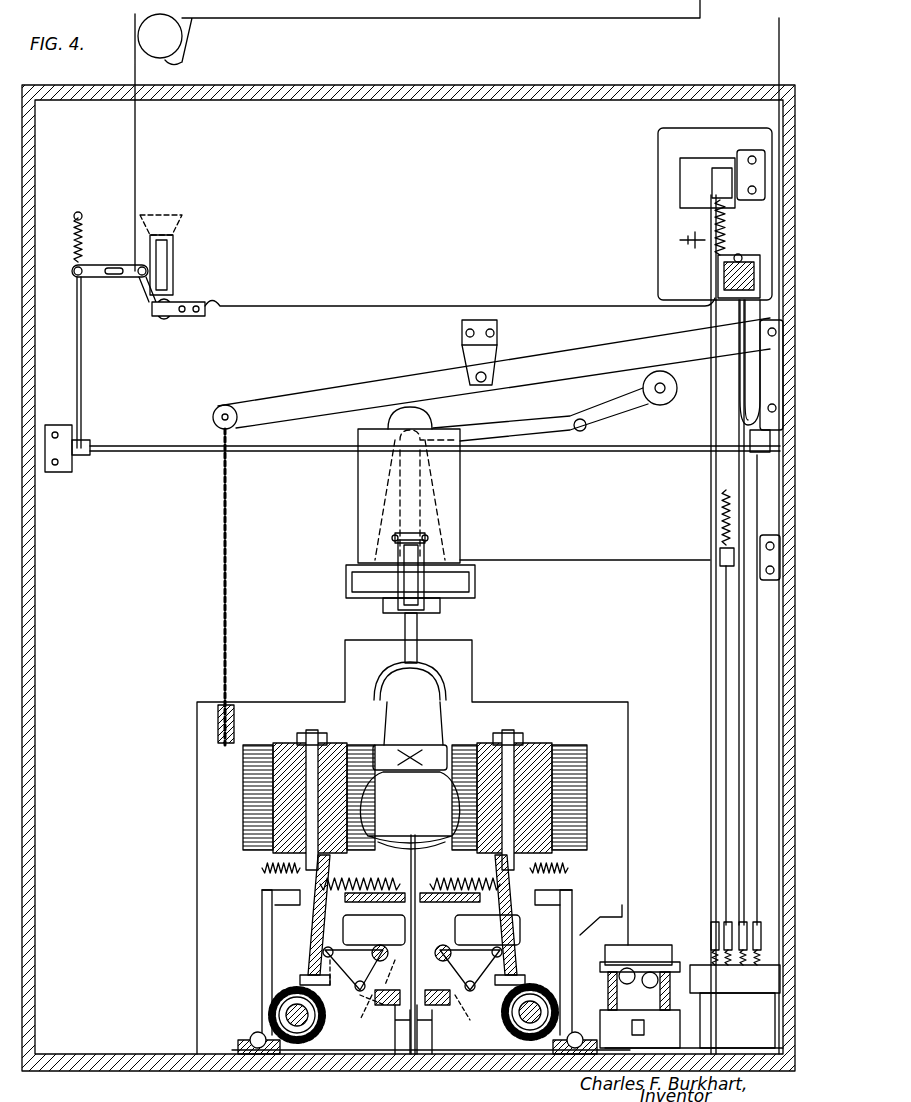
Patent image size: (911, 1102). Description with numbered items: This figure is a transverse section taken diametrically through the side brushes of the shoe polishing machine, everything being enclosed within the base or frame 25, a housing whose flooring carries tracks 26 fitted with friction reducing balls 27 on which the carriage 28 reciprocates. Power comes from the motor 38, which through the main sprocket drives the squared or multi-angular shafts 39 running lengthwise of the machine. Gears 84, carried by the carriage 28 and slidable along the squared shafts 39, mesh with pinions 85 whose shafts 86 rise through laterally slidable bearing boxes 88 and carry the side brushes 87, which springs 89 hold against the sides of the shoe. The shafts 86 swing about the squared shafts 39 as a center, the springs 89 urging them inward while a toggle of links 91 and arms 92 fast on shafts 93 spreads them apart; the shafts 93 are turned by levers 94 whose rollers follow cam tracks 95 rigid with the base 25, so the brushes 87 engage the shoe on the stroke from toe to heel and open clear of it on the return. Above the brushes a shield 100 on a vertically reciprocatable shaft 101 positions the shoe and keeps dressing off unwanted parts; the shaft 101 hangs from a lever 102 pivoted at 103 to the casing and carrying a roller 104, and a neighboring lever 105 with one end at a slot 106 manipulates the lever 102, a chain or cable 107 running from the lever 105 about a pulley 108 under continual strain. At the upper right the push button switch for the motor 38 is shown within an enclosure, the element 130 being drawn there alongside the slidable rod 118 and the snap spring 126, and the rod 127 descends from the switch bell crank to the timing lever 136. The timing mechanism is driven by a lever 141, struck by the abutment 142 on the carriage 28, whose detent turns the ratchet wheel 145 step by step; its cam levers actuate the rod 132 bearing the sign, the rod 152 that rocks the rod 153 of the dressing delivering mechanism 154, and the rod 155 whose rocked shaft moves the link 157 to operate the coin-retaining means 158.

The base or frame 25 is at (790, 786).
The tracks 26 is at (282, 1056).
The balls 27 is at (256, 1055).
The carriage 28 is at (262, 935).
The motor 38 is at (417, 135).
The squared or multi-angular shafts 39 is at (322, 1022).
The gears 84 is at (525, 1018).
The pinions 85 is at (275, 990).
The shafts 86 is at (300, 880).
The side brushes 87 is at (403, 800).
The bearing boxes 88 is at (262, 872).
The springs 89 is at (410, 876).
The links 91 is at (412, 975).
The arms 92 is at (431, 922).
The shafts 93 is at (400, 964).
The levers 94 is at (414, 1022).
The cam tracks 95 is at (368, 1010).
The shield 100 is at (440, 718).
The vertically reciprocatable shaft 101 is at (418, 630).
The lever 102 is at (522, 428).
The pivot 103 is at (578, 431).
The roller 104 is at (662, 406).
The lever 105 is at (555, 360).
The slot 106 is at (745, 375).
The chain or cable 107 is at (222, 600).
The pulley 108 is at (238, 710).
The slidable rod 118 is at (742, 260).
The spring 126 is at (722, 277).
The rod 127 is at (740, 655).
The solenoid 130 is at (715, 172).
The rod 132 is at (712, 697).
The lever 136 is at (585, 511).
The lever 141 is at (640, 984).
The abutment 142 is at (622, 912).
The ratchet wheel 145 is at (694, 985).
The rod 152 is at (728, 748).
The rod 153 is at (590, 560).
The delivering mechanism 154 is at (460, 586).
The rod 155 is at (757, 602).
The link 157 is at (82, 375).
The coin-retaining means 158 is at (393, 265).